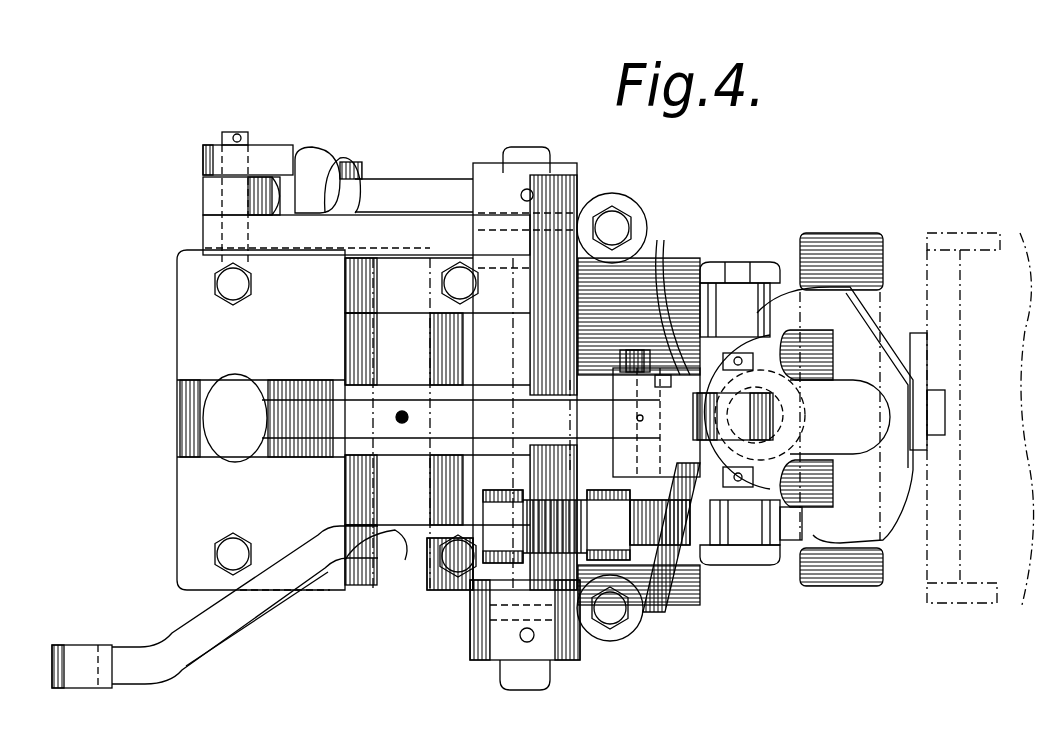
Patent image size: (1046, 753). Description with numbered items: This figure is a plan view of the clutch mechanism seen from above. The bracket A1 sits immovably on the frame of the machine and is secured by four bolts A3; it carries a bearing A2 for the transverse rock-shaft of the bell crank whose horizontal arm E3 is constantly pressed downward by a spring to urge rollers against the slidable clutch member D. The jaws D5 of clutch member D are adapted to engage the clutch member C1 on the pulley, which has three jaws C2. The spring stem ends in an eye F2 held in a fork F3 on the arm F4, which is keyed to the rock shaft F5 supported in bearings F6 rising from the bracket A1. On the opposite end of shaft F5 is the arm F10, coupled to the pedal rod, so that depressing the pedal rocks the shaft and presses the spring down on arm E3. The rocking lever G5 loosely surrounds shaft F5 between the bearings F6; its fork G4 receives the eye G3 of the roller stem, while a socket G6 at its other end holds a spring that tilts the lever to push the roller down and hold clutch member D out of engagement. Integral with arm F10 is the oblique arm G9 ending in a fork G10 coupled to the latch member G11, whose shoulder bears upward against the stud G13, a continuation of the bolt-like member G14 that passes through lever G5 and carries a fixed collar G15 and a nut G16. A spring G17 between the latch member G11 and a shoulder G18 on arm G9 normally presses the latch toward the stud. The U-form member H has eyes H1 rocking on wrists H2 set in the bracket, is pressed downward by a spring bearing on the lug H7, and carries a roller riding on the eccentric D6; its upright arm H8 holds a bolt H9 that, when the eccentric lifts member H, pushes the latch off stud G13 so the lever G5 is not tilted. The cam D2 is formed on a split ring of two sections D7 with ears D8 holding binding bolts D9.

The bracket A1 is at (190, 330).
The bearing A2 is at (445, 678).
The bolts A3 is at (215, 285).
The eye F2 is at (203, 200).
The fork F3 is at (203, 160).
The arm F4 is at (366, 203).
The rock shaft F5 is at (408, 212).
The bearings F6 is at (437, 419).
The arm F10 is at (215, 628).
The arm E3 is at (393, 212).
The eye G3 is at (690, 330).
The fork G4 is at (740, 385).
The rocking lever G5 is at (461, 419).
The socket G6 is at (225, 415).
The arm G9 is at (410, 540).
The fork G10 is at (522, 500).
The latch member G11 is at (510, 660).
The stud G13 is at (675, 560).
The bolt-like member G14 is at (668, 375).
The fixed collar G15 is at (650, 470).
The nut G16 is at (622, 362).
The expanding coiled spring G17 is at (545, 490).
The shoulder G18 is at (450, 590).
The clutch member D is at (671, 553).
The cam D2 is at (672, 300).
The jaws D5 is at (918, 333).
The eccentric D6 is at (855, 588).
The ring sections D7 is at (668, 660).
The ears D8 is at (606, 228).
The binding bolts D9 is at (628, 235).
The U-form member H is at (835, 415).
The eyes H1 is at (735, 310).
The bolt-form axle or wrist H2 is at (718, 275).
The lug H7 is at (797, 412).
The upright arm H8 is at (742, 547).
The bolt H9 is at (792, 542).
The clutch member C1 is at (1020, 235).
The jaws C2 is at (948, 258).